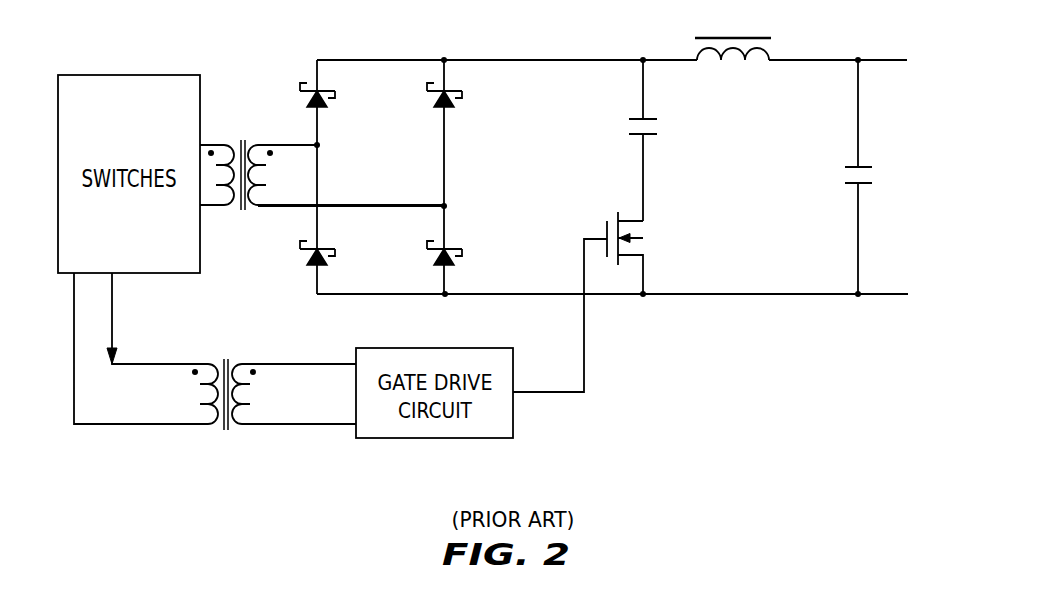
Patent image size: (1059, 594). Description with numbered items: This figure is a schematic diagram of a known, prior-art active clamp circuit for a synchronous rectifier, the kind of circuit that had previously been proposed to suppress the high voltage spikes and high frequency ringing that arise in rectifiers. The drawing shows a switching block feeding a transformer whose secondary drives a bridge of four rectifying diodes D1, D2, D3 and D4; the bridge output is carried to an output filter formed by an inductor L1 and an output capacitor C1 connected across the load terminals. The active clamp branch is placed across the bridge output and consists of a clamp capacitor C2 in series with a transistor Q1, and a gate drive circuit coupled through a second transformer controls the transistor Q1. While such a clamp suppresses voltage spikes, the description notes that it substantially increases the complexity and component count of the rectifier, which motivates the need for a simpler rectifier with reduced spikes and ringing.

The rectifier diode D1 is at (341, 101).
The rectifier diode D2 is at (467, 101).
The rectifier diode D3 is at (341, 247).
The rectifier diode D4 is at (467, 247).
The output capacitor C1 is at (885, 177).
The capacitor C2 is at (669, 140).
The MOSFET transistor Q1 is at (658, 253).
The inductor L1 is at (754, 31).